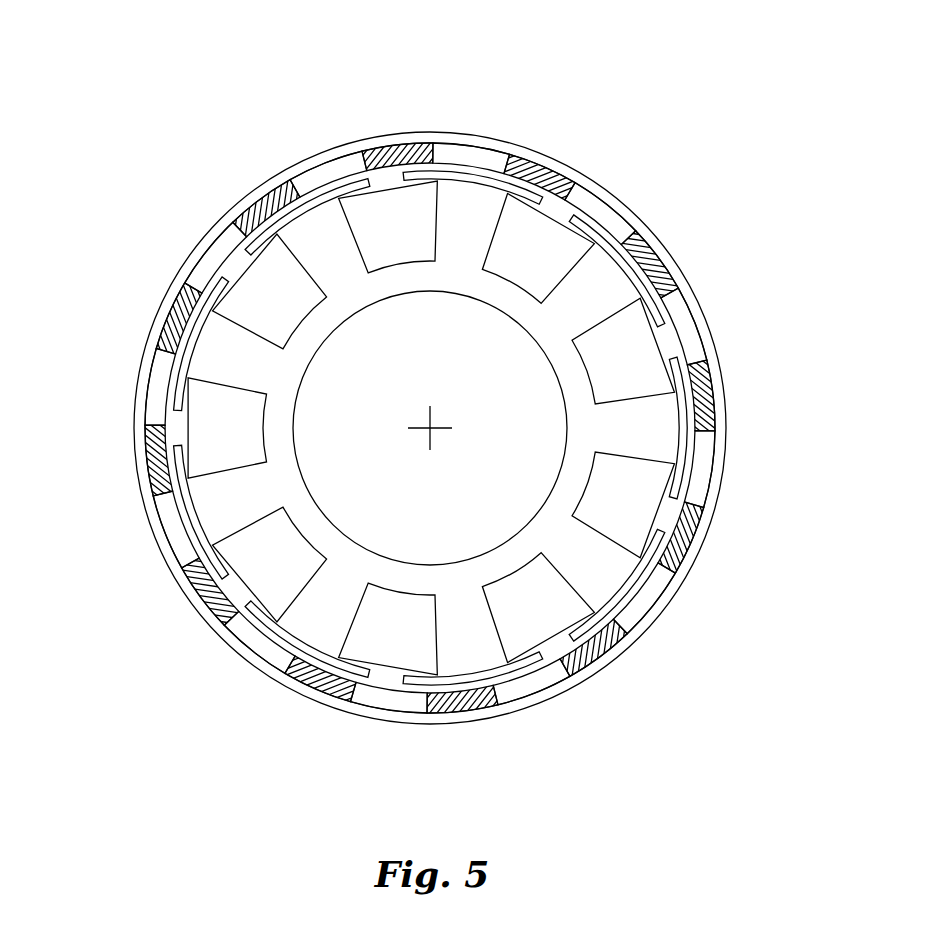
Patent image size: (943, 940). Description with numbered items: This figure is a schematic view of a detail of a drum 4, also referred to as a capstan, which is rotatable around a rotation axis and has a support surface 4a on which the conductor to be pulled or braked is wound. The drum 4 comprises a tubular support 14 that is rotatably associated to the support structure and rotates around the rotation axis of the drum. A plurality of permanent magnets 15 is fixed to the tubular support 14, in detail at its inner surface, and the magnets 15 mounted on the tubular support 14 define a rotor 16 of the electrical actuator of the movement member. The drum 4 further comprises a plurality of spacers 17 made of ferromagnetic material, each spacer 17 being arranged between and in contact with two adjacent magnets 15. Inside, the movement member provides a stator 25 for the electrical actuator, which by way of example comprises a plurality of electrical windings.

The drum 4 is at (427, 413).
The support surface 4a is at (173, 287).
The tubular support 14 is at (394, 369).
The permanent magnets 15 is at (395, 155).
The rotor 16 is at (386, 182).
The spacers 17 is at (330, 170).
The stator 25 is at (338, 273).